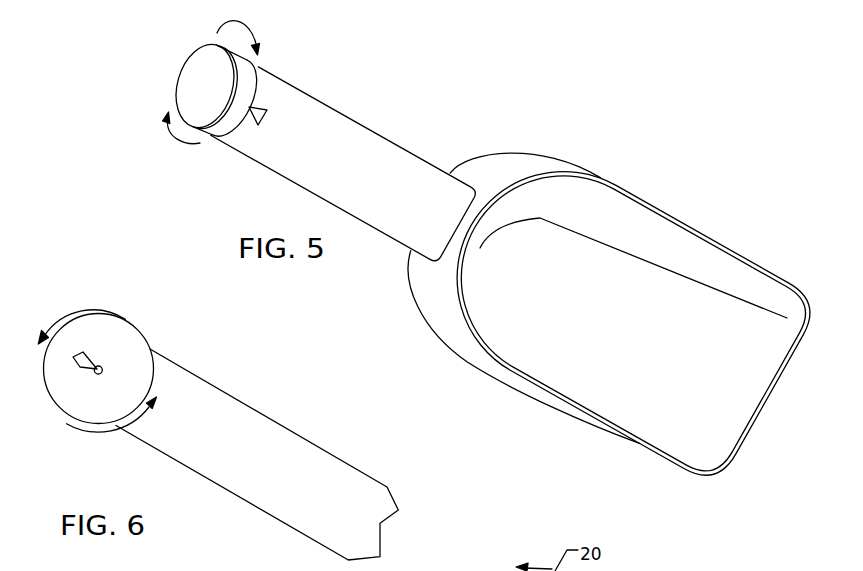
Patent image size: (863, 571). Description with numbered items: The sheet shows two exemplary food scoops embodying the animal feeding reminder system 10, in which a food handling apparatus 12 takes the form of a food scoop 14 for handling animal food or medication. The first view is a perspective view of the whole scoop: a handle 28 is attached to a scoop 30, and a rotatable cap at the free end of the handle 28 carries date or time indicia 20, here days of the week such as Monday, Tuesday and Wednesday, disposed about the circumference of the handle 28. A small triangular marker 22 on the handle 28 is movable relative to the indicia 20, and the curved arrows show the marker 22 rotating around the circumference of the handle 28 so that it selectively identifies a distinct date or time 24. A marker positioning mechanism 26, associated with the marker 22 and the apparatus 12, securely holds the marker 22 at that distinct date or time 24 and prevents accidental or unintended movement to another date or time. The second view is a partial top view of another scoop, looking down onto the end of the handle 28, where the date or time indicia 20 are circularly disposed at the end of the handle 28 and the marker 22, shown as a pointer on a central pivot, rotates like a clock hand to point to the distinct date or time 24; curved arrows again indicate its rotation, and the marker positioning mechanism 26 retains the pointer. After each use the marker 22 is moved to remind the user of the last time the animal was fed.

In FIG. 5, the animal feeding reminder system 10 is at (482, 260).
In FIG. 5, the food handling apparatus 12 is at (482, 260).
In FIG. 5, the food scoop 14 is at (482, 260).
In FIG. 5, the date or time indicia 20 is at (248, 61).
In FIG. 6, the date or time indicia 20 is at (142, 344).
In FIG. 5, the marker 22 is at (268, 111).
In FIG. 6, the marker 22 is at (141, 339).
In FIG. 5, the distinct date or time 24 is at (255, 86).
In FIG. 6, the distinct date or time 24 is at (72, 349).
In FIG. 5, the marker positioning mechanism 26 is at (222, 87).
In FIG. 6, the marker positioning mechanism 26 is at (82, 352).
In FIG. 5, the handle 28 is at (370, 160).
In FIG. 6, the handle 28 is at (298, 452).
In FIG. 5, the scoop 30 is at (653, 285).